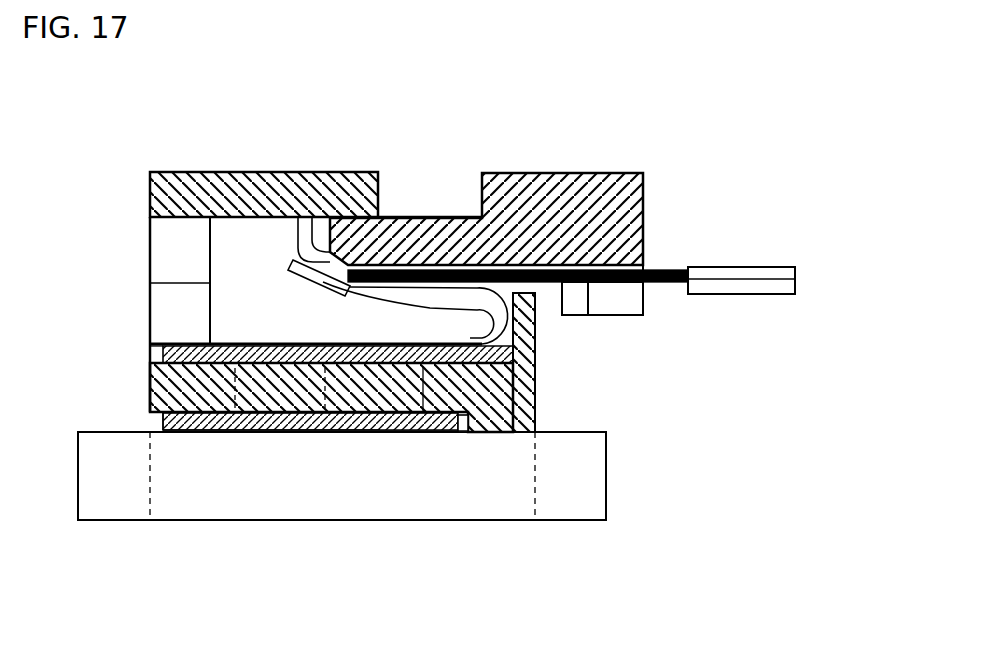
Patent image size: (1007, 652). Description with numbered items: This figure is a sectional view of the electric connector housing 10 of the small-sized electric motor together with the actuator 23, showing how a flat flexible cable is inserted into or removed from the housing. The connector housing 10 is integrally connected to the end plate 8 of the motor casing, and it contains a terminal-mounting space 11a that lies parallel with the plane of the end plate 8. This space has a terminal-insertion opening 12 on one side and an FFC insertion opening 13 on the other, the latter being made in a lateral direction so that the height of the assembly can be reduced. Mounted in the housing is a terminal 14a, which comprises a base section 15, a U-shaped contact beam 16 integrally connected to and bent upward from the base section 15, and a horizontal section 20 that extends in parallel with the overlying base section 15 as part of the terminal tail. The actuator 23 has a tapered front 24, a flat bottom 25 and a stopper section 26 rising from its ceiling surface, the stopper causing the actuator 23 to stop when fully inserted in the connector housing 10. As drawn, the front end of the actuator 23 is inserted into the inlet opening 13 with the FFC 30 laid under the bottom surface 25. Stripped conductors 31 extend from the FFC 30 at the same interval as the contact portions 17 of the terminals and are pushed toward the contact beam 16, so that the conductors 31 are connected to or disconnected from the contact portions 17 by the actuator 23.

The end plate 8 is at (585, 483).
The electric connector housing 10 is at (495, 390).
The terminal-mounting space 11a is at (302, 430).
The terminal-insertion opening 12 is at (267, 258).
The flat flexible cable insertion opening 13 is at (520, 287).
The terminal 14a is at (520, 352).
The base section 15 is at (423, 433).
The U-shaped contact beam 16 is at (402, 300).
The contact portion 17 is at (299, 250).
The horizontal section 20 is at (373, 432).
The actuator 23 is at (660, 165).
The tapered front 24 is at (315, 218).
The flat bottom 25 is at (497, 270).
The stopper section 26 is at (482, 195).
The flat flexible cable 30 is at (690, 270).
The conductor 31 is at (337, 297).